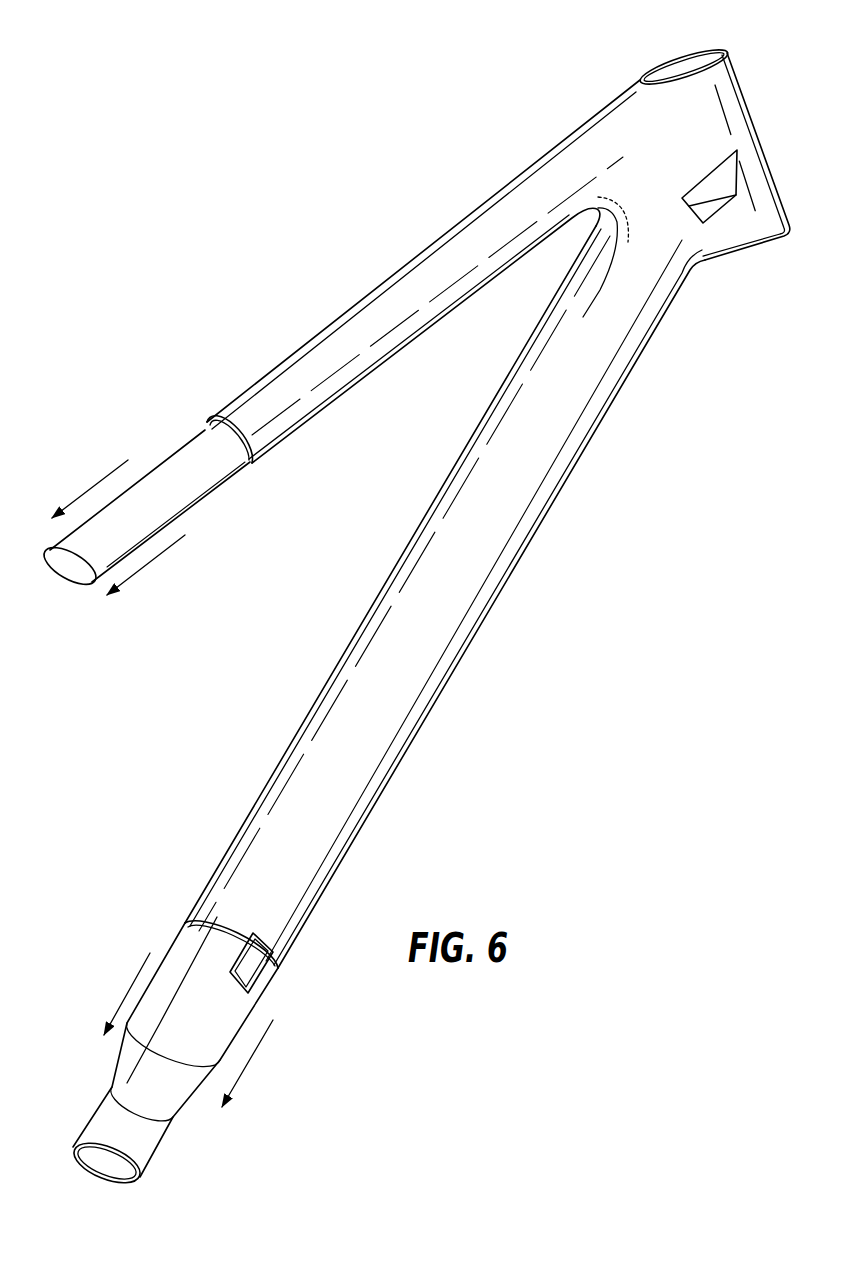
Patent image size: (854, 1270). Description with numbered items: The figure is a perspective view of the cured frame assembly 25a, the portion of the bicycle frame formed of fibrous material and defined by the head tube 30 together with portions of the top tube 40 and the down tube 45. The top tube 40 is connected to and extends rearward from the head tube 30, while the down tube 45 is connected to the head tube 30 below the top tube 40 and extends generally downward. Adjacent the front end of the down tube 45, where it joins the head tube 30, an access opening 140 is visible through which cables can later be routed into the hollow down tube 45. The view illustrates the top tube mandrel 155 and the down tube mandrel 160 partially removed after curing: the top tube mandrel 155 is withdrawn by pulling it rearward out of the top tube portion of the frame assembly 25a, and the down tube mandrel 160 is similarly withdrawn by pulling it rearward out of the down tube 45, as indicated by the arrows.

The frame assembly 25a is at (387, 77).
The head tube 30 is at (748, 128).
The top tube 40 is at (417, 270).
The down tube 45 is at (443, 632).
The access openings 140 is at (715, 193).
The top tube mandrel 155 is at (175, 473).
The down tube mandrel 160 is at (177, 957).